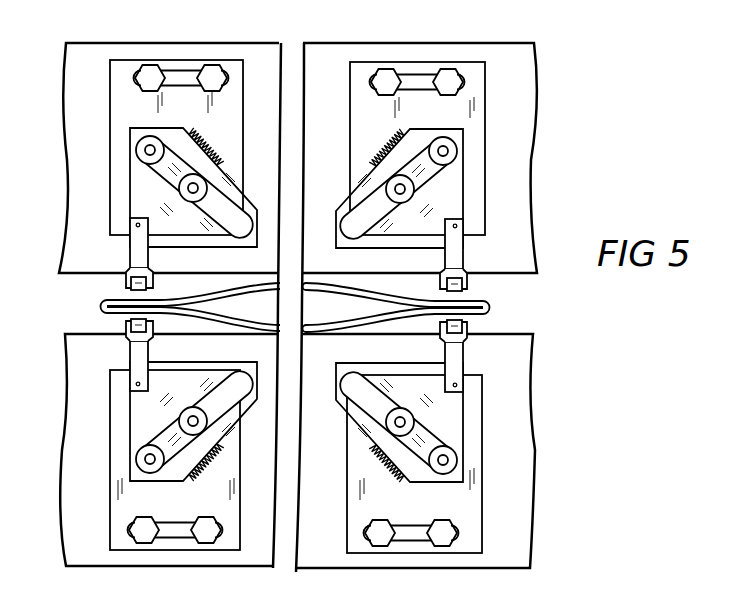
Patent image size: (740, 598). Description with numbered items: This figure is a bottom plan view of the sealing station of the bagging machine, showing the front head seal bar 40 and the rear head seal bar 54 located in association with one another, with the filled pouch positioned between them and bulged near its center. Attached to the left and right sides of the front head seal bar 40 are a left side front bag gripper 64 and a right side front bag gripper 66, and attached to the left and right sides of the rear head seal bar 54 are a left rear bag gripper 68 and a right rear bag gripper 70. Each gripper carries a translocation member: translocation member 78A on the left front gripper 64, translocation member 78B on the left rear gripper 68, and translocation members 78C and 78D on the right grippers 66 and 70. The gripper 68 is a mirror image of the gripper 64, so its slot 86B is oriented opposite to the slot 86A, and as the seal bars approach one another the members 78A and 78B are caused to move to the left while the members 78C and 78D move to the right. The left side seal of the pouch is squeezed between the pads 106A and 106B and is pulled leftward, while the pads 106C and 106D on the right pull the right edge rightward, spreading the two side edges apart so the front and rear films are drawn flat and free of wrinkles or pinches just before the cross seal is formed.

The front head seal bar 40 is at (284, 584).
The rear head seal bar 54 is at (302, 58).
The left side front bag gripper 64 is at (117, 500).
The right side front bag gripper 66 is at (465, 512).
The left rear bag gripper 68 is at (173, 97).
The right rear bag gripper 70 is at (413, 98).
The translocation member 78A is at (138, 408).
The translocation member 78B is at (142, 200).
The translocation member 78C is at (445, 428).
The translocation member 78D is at (455, 198).
The slot 86A is at (232, 224).
The slot 86B is at (180, 176).
The pad 106A is at (128, 322).
The pad 106B is at (128, 285).
The pad 106C is at (467, 322).
The pad 106D is at (470, 287).